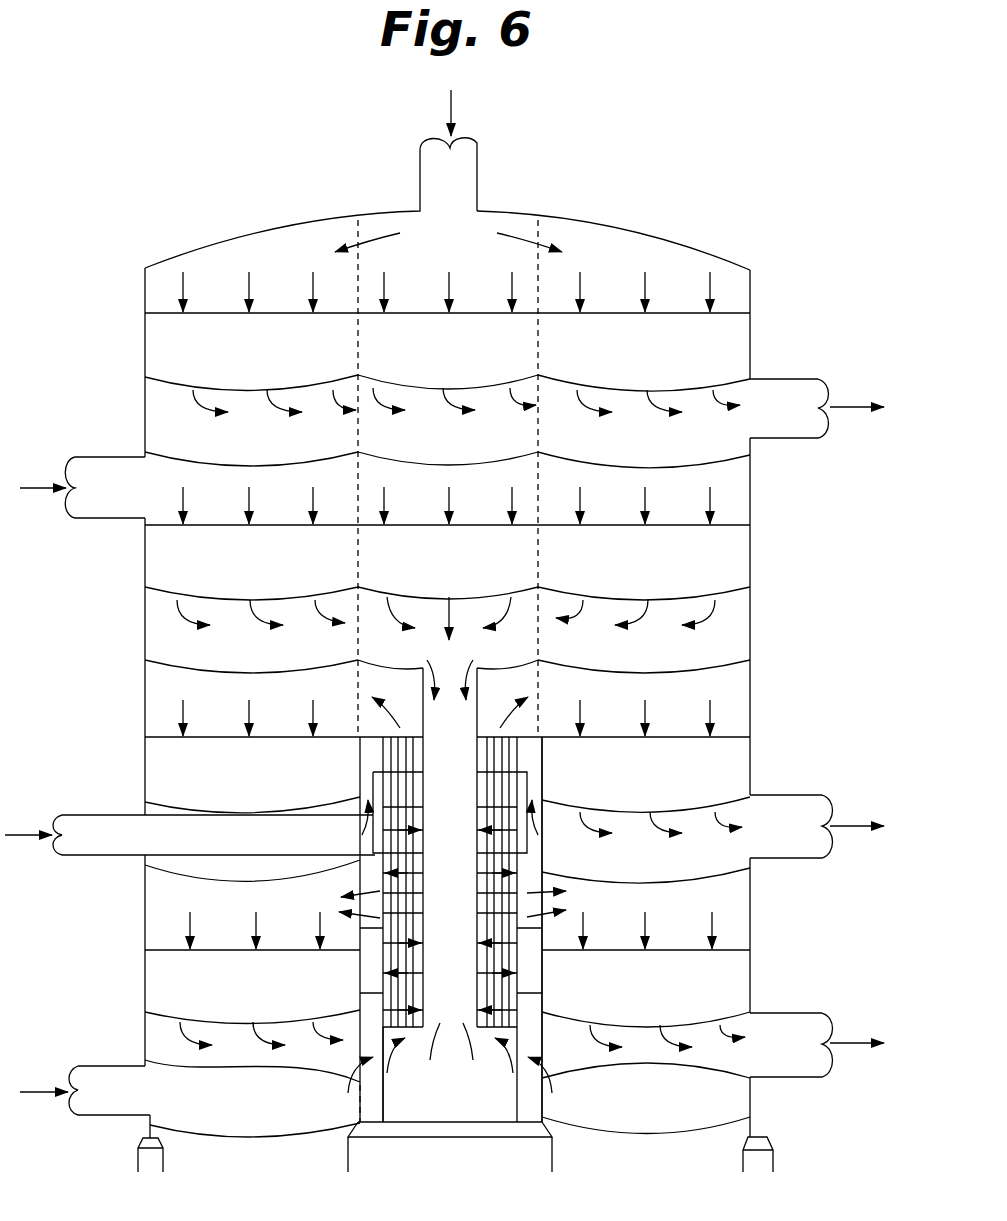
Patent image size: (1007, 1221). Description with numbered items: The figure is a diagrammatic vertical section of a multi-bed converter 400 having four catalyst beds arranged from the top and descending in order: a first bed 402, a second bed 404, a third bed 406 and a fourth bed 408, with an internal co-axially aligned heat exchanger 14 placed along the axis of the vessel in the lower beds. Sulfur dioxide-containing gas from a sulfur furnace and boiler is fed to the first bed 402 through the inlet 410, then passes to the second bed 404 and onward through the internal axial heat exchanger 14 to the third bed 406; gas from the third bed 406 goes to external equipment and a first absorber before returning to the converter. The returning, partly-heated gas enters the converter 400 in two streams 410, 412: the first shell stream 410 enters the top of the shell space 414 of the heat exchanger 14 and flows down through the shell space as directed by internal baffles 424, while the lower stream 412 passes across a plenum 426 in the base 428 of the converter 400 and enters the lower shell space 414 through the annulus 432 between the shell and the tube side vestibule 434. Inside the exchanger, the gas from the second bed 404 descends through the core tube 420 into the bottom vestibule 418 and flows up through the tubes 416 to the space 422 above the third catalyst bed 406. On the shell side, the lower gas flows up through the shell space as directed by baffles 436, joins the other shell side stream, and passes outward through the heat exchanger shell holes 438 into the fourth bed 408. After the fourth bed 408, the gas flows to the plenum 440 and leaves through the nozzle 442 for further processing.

The internal axial heat exchanger 14 is at (542, 752).
The multi-bed converter 400 is at (641, 235).
The first bed 402 is at (255, 347).
The second bed 404 is at (255, 557).
The third bed 406 is at (250, 765).
The fourth bed 408 is at (245, 975).
The first shell stream inlet 410 is at (95, 858).
The second stream 412 is at (105, 1065).
The shell space 414 is at (362, 965).
The tubes 416 is at (418, 882).
The bottom vestibule 418 is at (460, 1115).
The core tube 420 is at (480, 750).
The space above third catalyst bed 422 is at (298, 690).
The internal baffles 424 is at (487, 785).
The plenum 426 is at (290, 1105).
The base 428 is at (215, 1140).
The annulus 432 is at (533, 1008).
The tube side vestibule 434 is at (400, 1120).
The baffles 436 is at (478, 952).
The heat exchanger shell holes 438 is at (557, 903).
The plenum 440 is at (655, 1050).
The nozzle 442 is at (792, 1012).